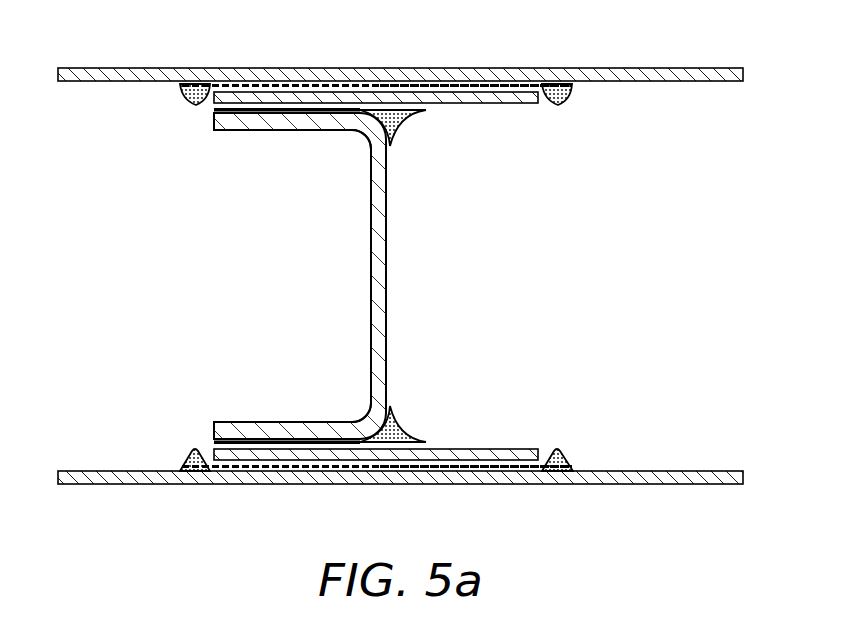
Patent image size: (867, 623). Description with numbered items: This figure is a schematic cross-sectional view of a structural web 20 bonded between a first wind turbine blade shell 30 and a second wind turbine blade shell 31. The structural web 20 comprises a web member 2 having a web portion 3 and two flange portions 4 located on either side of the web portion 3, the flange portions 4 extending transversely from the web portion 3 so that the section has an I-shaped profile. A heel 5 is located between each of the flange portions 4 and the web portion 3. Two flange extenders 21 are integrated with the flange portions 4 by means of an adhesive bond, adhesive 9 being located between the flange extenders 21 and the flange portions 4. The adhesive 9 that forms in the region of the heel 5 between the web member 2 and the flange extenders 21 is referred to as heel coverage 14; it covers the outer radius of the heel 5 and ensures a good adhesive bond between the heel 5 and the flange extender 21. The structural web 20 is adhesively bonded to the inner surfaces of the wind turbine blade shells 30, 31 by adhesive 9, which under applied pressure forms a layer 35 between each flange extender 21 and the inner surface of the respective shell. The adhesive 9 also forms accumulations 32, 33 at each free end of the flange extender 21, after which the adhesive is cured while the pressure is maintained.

The second wind turbine blade shell 31 is at (78, 68).
The first wind turbine blade shell 30 is at (79, 485).
The adhesive 9 is at (340, 84).
The layer 35 is at (470, 84).
The flange extender 21 is at (521, 103).
The flange portion 4 is at (242, 128).
The web member 2 is at (371, 278).
The web portion 3 is at (386, 278).
The heel 5 is at (362, 136).
The heel coverage 14 is at (398, 118).
The accumulation 33 is at (188, 104).
The accumulation 32 is at (559, 105).
The structural web 20 is at (634, 279).